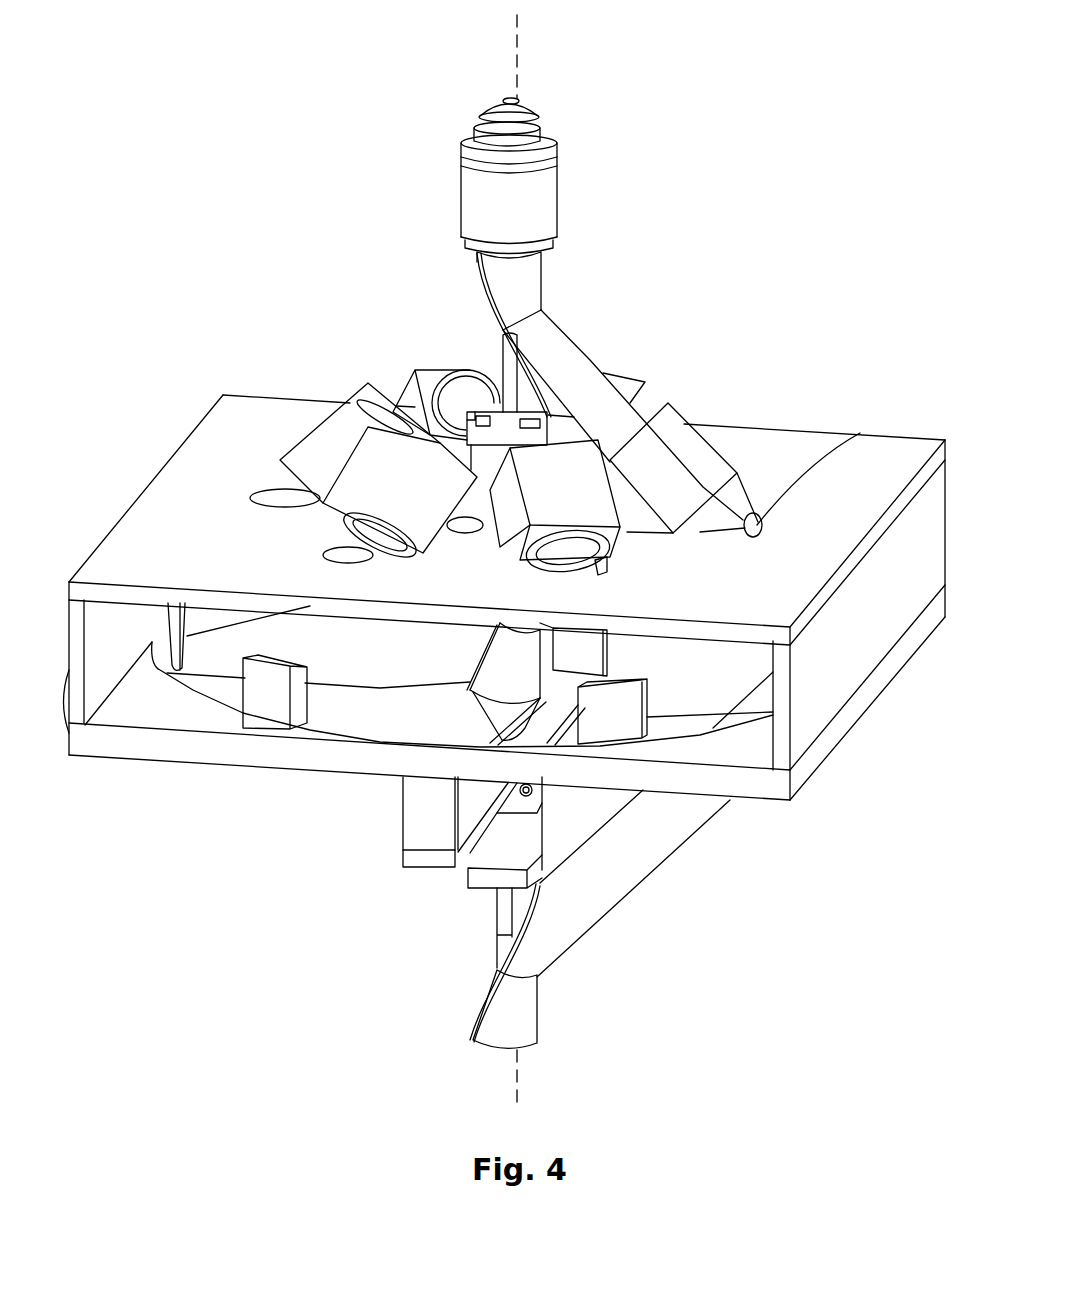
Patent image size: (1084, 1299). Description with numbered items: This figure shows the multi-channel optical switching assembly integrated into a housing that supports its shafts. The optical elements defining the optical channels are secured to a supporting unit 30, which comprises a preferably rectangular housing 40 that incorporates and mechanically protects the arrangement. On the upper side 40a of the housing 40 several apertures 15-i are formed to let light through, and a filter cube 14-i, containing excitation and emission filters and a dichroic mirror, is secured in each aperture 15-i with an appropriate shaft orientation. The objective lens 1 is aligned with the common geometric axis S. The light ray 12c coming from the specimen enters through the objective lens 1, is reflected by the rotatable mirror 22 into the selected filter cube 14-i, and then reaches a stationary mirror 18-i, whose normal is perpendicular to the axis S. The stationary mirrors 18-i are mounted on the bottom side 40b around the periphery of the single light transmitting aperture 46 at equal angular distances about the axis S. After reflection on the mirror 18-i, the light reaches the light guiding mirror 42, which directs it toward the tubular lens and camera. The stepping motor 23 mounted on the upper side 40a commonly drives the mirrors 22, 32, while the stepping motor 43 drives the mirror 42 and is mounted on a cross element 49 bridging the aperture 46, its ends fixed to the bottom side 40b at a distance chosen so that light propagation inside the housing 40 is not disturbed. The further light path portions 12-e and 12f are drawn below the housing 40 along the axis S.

The common geometric axis S is at (519, 44).
The objective lens 1 is at (562, 192).
The rotatable mirror 22 is at (490, 298).
The stepping motor 23 is at (497, 425).
The light ray 12c is at (577, 353).
The filter cube 14-i is at (368, 385).
The aperture 15-i is at (860, 433).
The housing 40 is at (177, 477).
The upper side 40a is at (137, 543).
The bottom side 40b is at (150, 713).
The stationary mirror 18-i is at (165, 650).
The rotatable mirror 32 is at (483, 662).
The supporting unit 30 is at (878, 697).
The light transmitting aperture 46 is at (680, 718).
The cross element 49 is at (403, 822).
The stepping motor 43 is at (462, 858).
The light guiding mirror 42 is at (470, 1012).
The arm 12-e is at (655, 855).
The shaft end 12f is at (533, 1020).